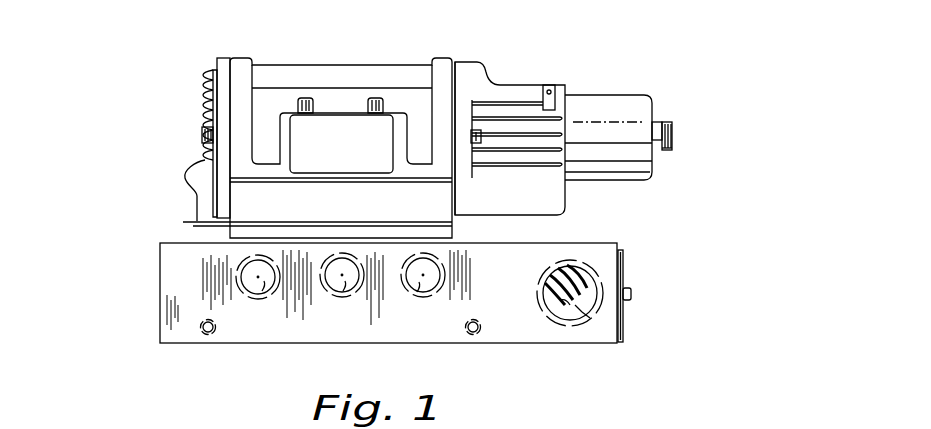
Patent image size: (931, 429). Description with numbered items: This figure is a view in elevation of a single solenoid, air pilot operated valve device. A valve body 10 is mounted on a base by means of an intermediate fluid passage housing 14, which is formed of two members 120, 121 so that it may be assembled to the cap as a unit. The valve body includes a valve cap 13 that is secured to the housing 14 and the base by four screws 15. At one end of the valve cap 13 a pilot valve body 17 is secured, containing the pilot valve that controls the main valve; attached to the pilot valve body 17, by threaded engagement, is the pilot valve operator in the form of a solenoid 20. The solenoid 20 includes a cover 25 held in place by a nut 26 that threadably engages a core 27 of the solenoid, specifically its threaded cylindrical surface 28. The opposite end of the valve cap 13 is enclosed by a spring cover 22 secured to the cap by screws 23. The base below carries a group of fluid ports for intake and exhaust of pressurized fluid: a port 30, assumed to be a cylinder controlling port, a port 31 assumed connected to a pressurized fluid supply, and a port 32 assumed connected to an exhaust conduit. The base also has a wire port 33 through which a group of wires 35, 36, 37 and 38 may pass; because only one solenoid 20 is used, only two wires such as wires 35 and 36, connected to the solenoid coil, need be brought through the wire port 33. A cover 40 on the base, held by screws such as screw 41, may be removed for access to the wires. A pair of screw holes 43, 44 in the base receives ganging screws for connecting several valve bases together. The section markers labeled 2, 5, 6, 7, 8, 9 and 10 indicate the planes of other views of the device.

The section line 2- 2 is at (177, 13).
The section line 5- 5 is at (180, 175).
The section line 6- 6 is at (118, 175).
The section line 7- 7 is at (200, 222).
The section line 8- 8 is at (142, 222).
The section line 9- 9 is at (123, 240).
The valve body 10 is at (445, 65).
The valve cap 13 is at (283, 74).
The intermediate fluid passage housing 14 is at (245, 210).
The screws 15 is at (307, 98).
The pilot valve body 17 is at (490, 92).
The solenoid 20 is at (602, 105).
The spring cover 22 is at (221, 66).
The screws 23 is at (200, 130).
The cover 25 is at (647, 107).
The nut 26 is at (665, 124).
The core 27 is at (672, 130).
The threaded cylindrical surface 28 is at (666, 152).
The port 30 is at (262, 291).
The port 31 is at (343, 291).
The port 32 is at (417, 292).
The wire port 33 is at (582, 316).
The wire 35 is at (573, 308).
The wire 36 is at (557, 287).
The wire 37 is at (586, 318).
The wire 38 is at (575, 273).
The cover 40 is at (625, 332).
The screw 41 is at (632, 297).
The screw hole 43 is at (210, 334).
The screw hole 44 is at (472, 334).
The member 120 is at (330, 234).
The member 121 is at (339, 203).